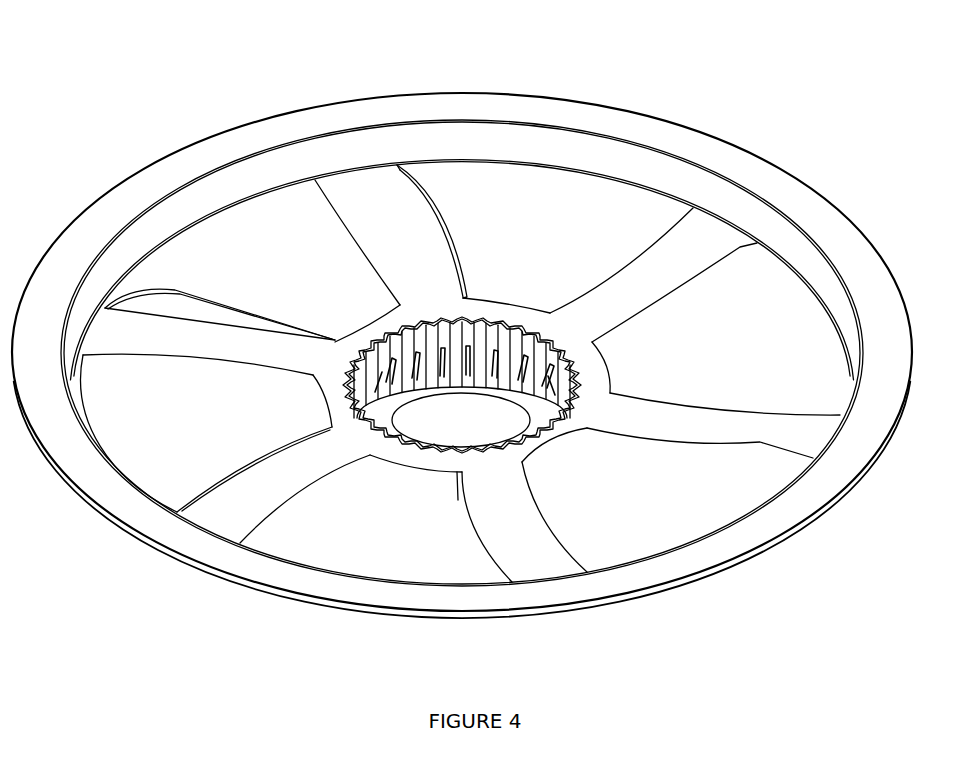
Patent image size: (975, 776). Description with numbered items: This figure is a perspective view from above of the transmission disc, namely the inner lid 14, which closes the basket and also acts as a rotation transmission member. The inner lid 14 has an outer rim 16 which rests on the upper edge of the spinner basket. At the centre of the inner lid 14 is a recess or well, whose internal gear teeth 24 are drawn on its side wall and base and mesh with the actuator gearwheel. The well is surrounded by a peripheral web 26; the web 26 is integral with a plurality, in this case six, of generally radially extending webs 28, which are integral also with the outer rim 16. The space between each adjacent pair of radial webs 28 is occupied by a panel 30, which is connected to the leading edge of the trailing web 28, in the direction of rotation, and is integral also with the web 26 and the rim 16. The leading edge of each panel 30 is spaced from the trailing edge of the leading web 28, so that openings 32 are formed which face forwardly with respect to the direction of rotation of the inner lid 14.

The inner lid 14 is at (738, 222).
The outer rim 16 is at (883, 292).
The fins 24 is at (528, 360).
The peripheral web 26 is at (515, 312).
The radially extending web 28 is at (386, 203).
The panel 30 is at (278, 243).
The opening 32 is at (178, 302).